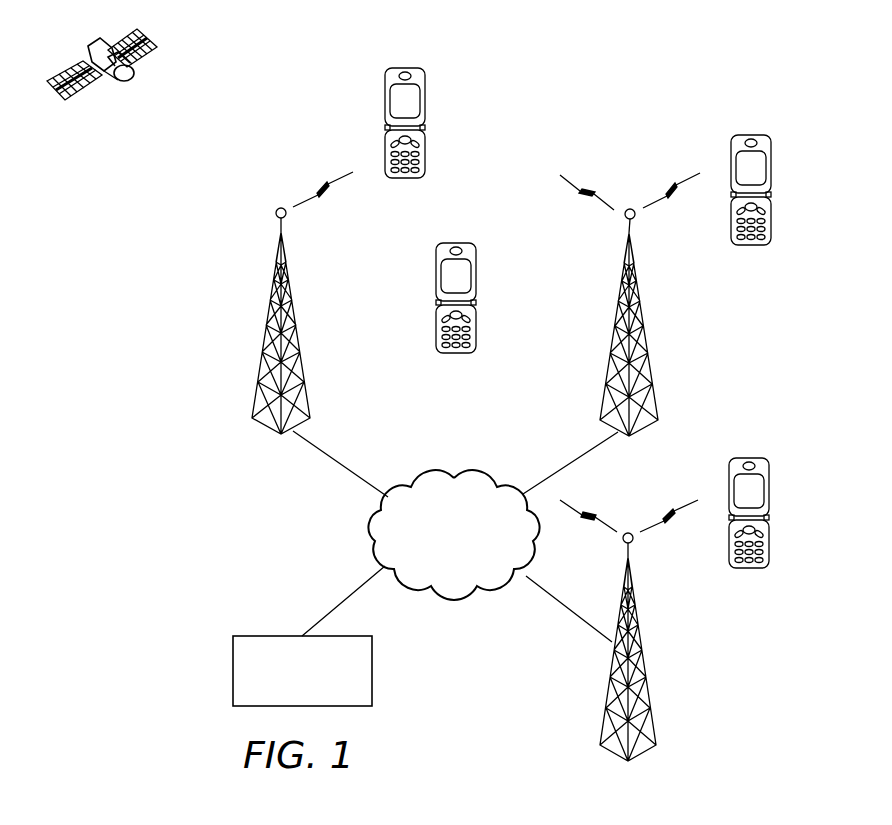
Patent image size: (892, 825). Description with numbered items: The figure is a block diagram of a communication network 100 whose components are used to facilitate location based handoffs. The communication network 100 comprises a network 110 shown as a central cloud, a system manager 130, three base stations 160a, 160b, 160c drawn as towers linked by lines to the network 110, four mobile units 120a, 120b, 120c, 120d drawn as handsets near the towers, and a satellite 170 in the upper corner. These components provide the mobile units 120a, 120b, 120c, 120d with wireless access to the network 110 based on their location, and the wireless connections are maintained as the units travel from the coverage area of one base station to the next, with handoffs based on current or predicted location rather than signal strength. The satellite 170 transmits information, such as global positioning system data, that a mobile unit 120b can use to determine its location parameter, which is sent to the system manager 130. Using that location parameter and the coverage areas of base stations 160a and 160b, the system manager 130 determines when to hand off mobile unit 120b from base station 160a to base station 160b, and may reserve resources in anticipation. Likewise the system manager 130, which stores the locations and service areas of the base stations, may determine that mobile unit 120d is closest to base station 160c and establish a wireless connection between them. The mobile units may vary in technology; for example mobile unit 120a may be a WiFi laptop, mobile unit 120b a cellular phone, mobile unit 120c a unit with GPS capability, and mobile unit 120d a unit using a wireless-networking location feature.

The communication network 100 is at (336, 540).
The network 110 is at (475, 545).
The mobile unit 120a is at (427, 96).
The mobile unit 120b is at (480, 268).
The mobile unit 120c is at (776, 162).
The mobile unit 120d is at (775, 546).
The system manager 130 is at (233, 672).
The base station 160a is at (264, 340).
The base station 160b is at (650, 341).
The base station 160c is at (647, 665).
The satellite 170 is at (92, 53).